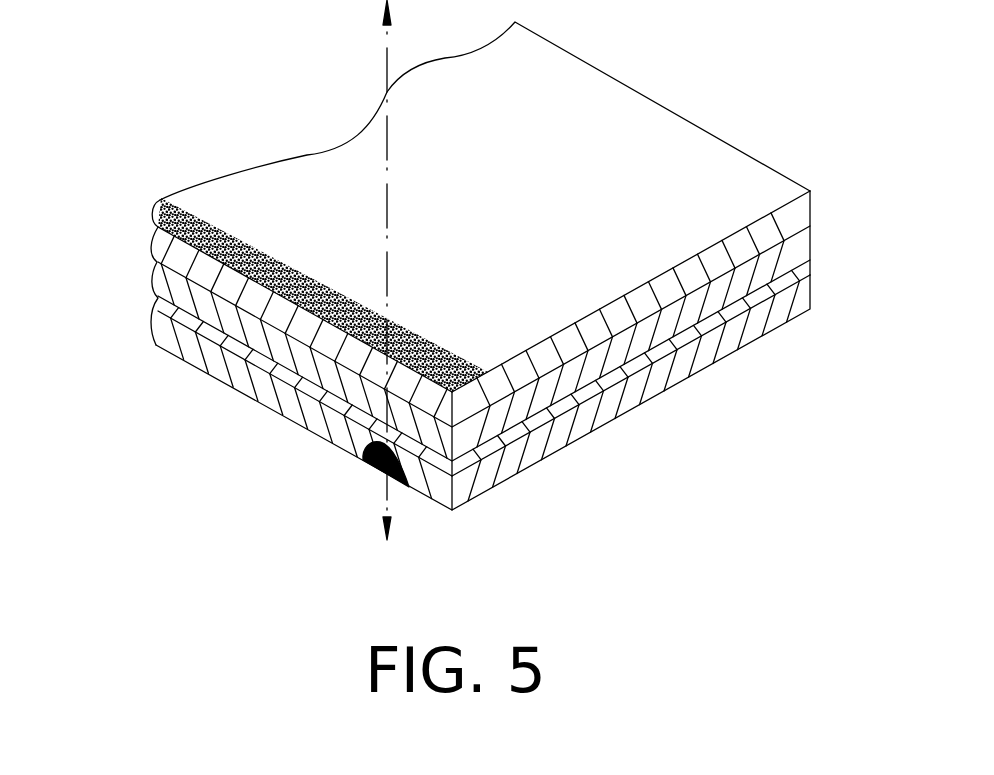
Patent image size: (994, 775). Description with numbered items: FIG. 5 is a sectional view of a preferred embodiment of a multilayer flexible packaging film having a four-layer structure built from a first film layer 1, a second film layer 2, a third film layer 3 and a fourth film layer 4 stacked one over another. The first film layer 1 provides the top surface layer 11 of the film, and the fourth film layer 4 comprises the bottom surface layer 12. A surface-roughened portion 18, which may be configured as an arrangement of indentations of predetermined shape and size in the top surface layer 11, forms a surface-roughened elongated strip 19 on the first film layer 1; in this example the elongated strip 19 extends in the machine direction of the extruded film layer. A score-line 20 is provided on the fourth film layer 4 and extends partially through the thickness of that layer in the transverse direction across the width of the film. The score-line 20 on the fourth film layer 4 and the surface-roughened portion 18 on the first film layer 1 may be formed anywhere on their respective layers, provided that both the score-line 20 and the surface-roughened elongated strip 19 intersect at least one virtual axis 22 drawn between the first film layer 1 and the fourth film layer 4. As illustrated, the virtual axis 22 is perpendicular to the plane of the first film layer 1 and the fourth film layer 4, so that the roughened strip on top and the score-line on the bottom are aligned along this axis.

The first film layer 1 is at (156, 240).
The second film layer 2 is at (156, 282).
The third film layer 3 is at (156, 300).
The fourth film layer 4 is at (156, 328).
The top surface layer 11 is at (300, 203).
The bottom surface layer 12 is at (297, 421).
The surface-roughened portion 18 is at (266, 246).
The surface-roughened elongated strip 19 is at (391, 323).
The score-line 20 is at (393, 480).
The virtual axis 22 is at (388, 138).